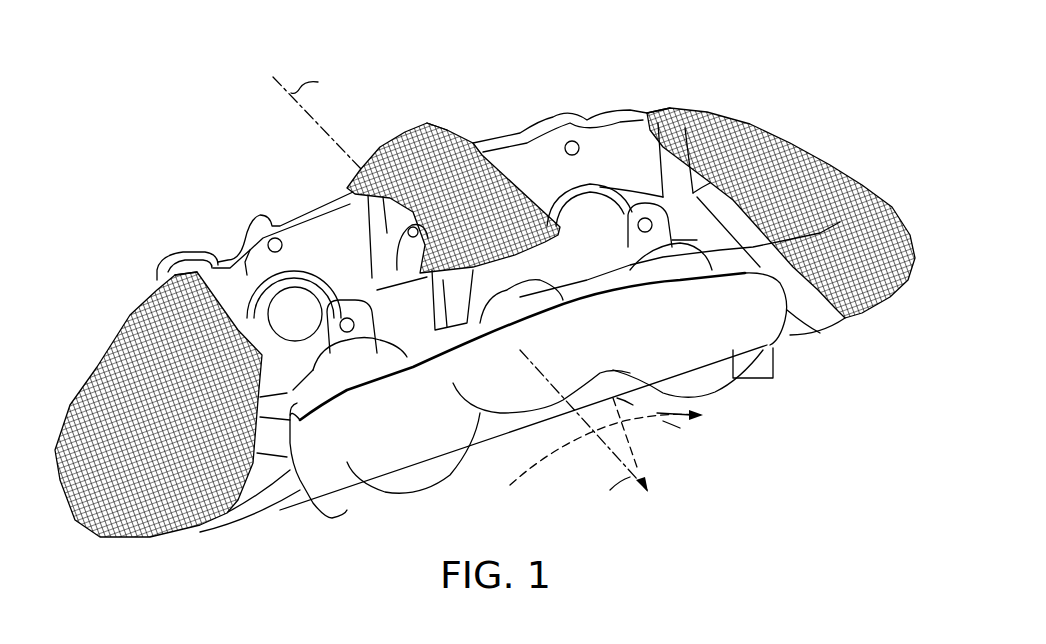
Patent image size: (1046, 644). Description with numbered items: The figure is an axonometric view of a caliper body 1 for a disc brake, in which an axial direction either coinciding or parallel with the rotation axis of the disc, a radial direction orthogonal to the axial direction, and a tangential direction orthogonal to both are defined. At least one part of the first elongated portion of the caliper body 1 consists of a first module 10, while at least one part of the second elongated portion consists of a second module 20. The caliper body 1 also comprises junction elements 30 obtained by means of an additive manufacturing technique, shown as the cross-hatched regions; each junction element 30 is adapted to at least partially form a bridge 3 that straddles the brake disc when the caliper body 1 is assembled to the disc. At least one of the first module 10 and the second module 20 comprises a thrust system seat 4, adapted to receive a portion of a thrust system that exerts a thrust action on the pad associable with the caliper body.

The caliper body 1 is at (256, 163).
The bridge 3 is at (188, 270).
The thrust system seat 4 is at (291, 303).
The first module 10 is at (521, 172).
The second module 20 is at (453, 382).
The junction element 30 is at (367, 152).